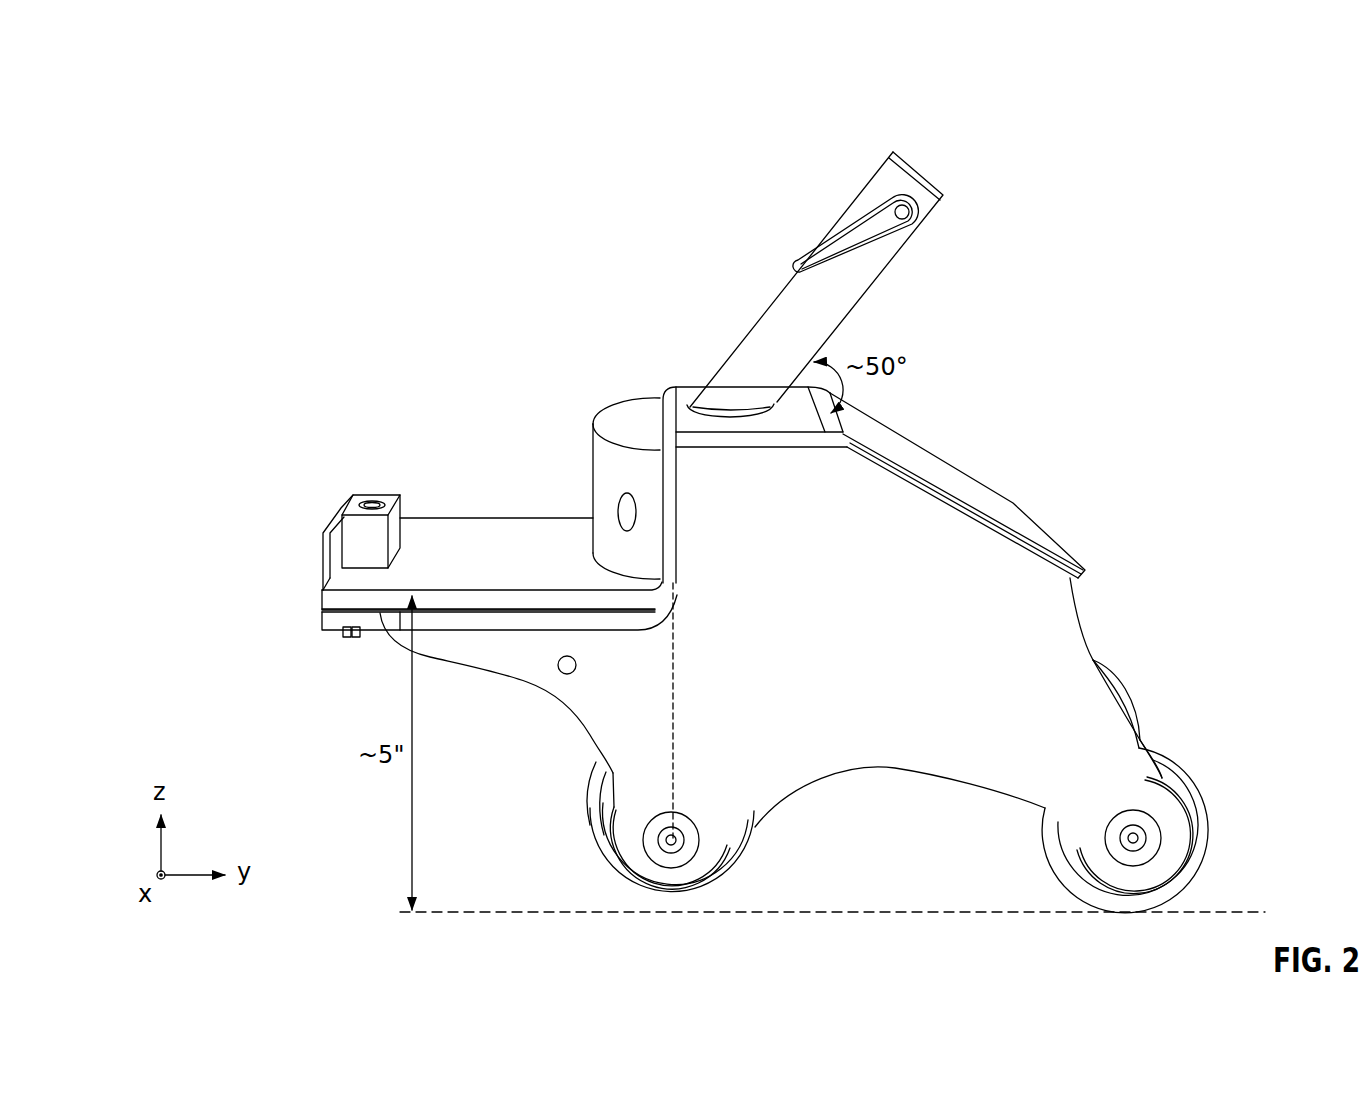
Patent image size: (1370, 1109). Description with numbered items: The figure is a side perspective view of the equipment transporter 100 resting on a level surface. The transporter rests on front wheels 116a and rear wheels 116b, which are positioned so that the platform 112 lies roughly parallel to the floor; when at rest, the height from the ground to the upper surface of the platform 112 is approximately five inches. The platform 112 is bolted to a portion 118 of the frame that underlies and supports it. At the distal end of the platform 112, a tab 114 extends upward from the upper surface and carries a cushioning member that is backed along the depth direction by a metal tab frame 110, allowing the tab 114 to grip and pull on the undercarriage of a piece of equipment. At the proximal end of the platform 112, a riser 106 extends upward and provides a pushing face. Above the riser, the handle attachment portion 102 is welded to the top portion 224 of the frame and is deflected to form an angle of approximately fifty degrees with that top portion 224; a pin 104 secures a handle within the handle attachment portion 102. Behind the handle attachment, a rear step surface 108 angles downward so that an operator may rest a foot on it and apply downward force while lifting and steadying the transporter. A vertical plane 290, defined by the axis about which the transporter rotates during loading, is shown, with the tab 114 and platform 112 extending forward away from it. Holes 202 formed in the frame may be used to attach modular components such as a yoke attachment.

The equipment transporter 100 is at (243, 118).
The handle attachment portion 102 is at (752, 313).
The pin 104 is at (903, 173).
The riser 106 is at (580, 449).
The rear step surface 108 is at (992, 451).
The metal tab frame 110 is at (315, 532).
The platform 112 is at (471, 514).
The tab 114 is at (376, 484).
The front wheels 116a is at (580, 846).
The rear wheels 116b is at (1120, 660).
The portion of the frame 118 is at (327, 637).
The holes 202 is at (558, 673).
The top portion of the frame 224 is at (687, 377).
The vertical plane 290 is at (685, 670).